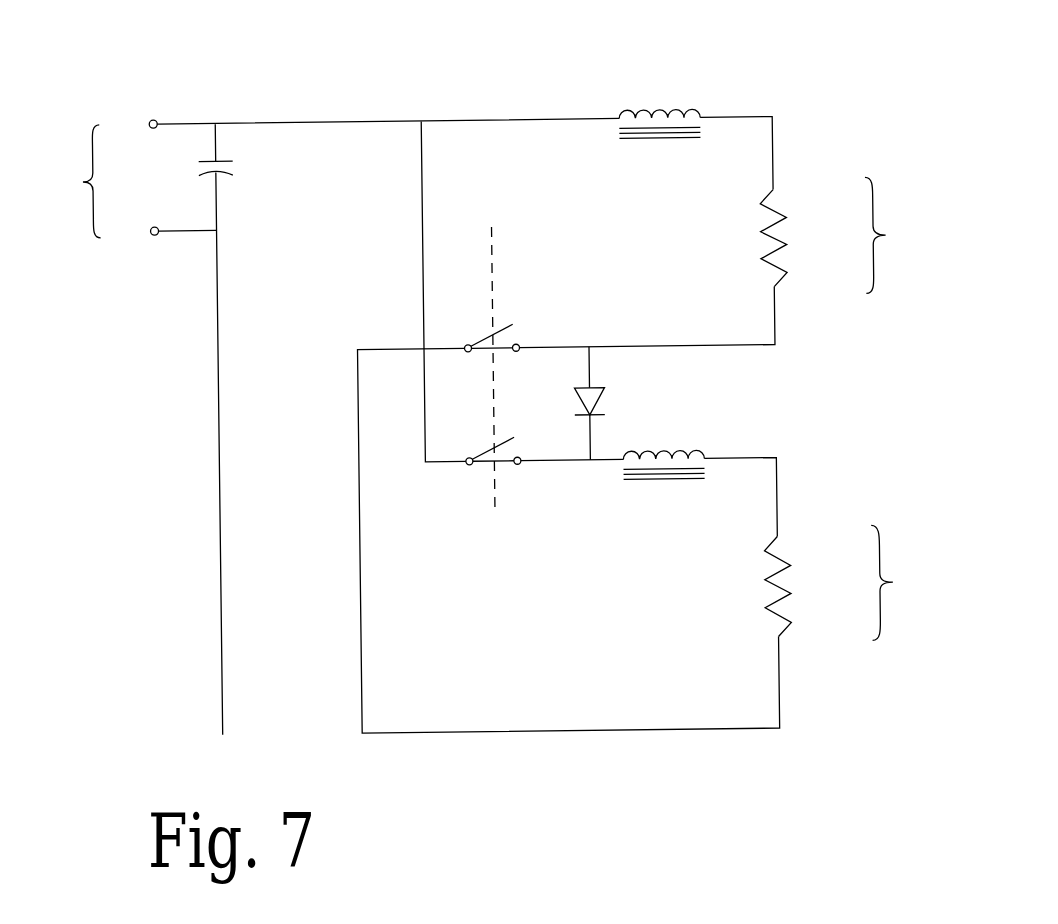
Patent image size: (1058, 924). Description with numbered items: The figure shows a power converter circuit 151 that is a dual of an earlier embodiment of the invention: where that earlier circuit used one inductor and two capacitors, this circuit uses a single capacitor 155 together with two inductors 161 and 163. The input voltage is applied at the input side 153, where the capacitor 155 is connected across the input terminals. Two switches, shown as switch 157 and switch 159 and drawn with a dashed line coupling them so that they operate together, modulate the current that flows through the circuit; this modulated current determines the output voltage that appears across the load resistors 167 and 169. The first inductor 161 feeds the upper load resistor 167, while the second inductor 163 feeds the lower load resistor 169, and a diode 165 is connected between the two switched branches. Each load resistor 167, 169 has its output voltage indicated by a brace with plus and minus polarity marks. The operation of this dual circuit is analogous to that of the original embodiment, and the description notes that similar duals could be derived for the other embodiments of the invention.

The power converter circuit 151 is at (290, 29).
The input voltage terminals 153 is at (121, 208).
The capacitor 155 is at (290, 160).
The switch S1 157 is at (526, 330).
The switch 159 is at (471, 477).
The inductor 161 is at (631, 90).
The inductor 163 is at (674, 497).
The diode Cr1 165 is at (609, 376).
The load resistor 167 is at (788, 196).
The load resistor 169 is at (787, 531).